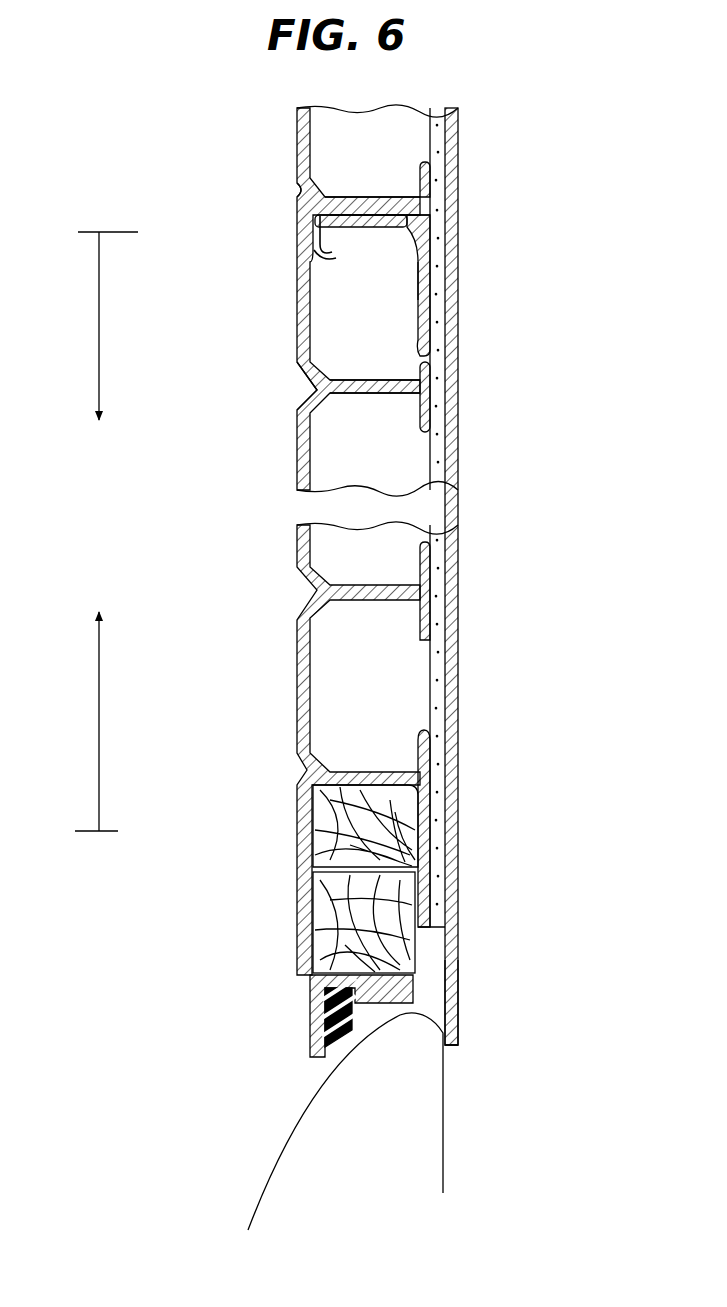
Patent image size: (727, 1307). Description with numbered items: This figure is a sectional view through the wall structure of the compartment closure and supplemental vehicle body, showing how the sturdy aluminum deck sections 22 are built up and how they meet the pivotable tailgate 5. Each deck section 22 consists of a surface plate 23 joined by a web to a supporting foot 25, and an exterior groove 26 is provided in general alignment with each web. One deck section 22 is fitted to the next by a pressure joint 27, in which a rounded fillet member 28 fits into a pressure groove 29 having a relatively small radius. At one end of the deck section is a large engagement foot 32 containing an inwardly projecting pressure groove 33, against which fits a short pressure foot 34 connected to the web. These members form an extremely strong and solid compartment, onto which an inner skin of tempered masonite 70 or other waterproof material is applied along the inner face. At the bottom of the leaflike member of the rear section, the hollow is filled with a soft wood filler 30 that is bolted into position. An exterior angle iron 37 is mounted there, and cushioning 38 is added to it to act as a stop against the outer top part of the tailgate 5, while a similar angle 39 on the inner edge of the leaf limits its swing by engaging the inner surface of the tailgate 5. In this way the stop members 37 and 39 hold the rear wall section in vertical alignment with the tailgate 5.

The pivotable tailgate 5 is at (377, 1131).
The aluminum deck section 22 is at (106, 531).
The surface plate 23 is at (280, 557).
The supporting foot 25 is at (420, 420).
The exterior groove 26 is at (310, 390).
The pressure joint 27 is at (262, 215).
The rounded fillet member 28 is at (300, 246).
The pressure groove 29 is at (302, 256).
The soft wood filler 30 is at (392, 813).
The large engagement foot 32 is at (420, 247).
The inwardly projecting pressure groove 33 is at (430, 276).
The short pressure foot 34 is at (416, 222).
The exterior angle iron 37 is at (318, 1008).
The cushioning 38 is at (330, 1033).
The angle 39 is at (450, 1008).
The tempered masonite 70 is at (447, 617).